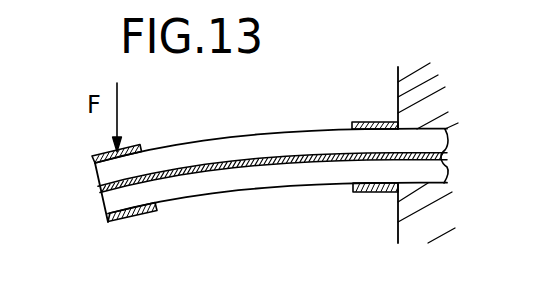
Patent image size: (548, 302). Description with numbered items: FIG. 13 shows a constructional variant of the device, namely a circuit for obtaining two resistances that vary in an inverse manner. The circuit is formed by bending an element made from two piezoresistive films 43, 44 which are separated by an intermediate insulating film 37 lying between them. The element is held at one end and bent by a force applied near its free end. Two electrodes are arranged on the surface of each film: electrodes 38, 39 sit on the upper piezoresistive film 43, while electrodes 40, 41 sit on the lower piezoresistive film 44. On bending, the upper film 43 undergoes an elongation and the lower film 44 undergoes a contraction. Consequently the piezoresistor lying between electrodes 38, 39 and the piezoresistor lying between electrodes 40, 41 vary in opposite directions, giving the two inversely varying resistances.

The intermediate damping layer 37 is at (100, 190).
The electrode 38 is at (92, 159).
The electrode 39 is at (363, 122).
The electrode 40 is at (117, 222).
The electrode 41 is at (357, 193).
The piezoresistive film 43 is at (243, 140).
The piezoresistive film 44 is at (252, 173).